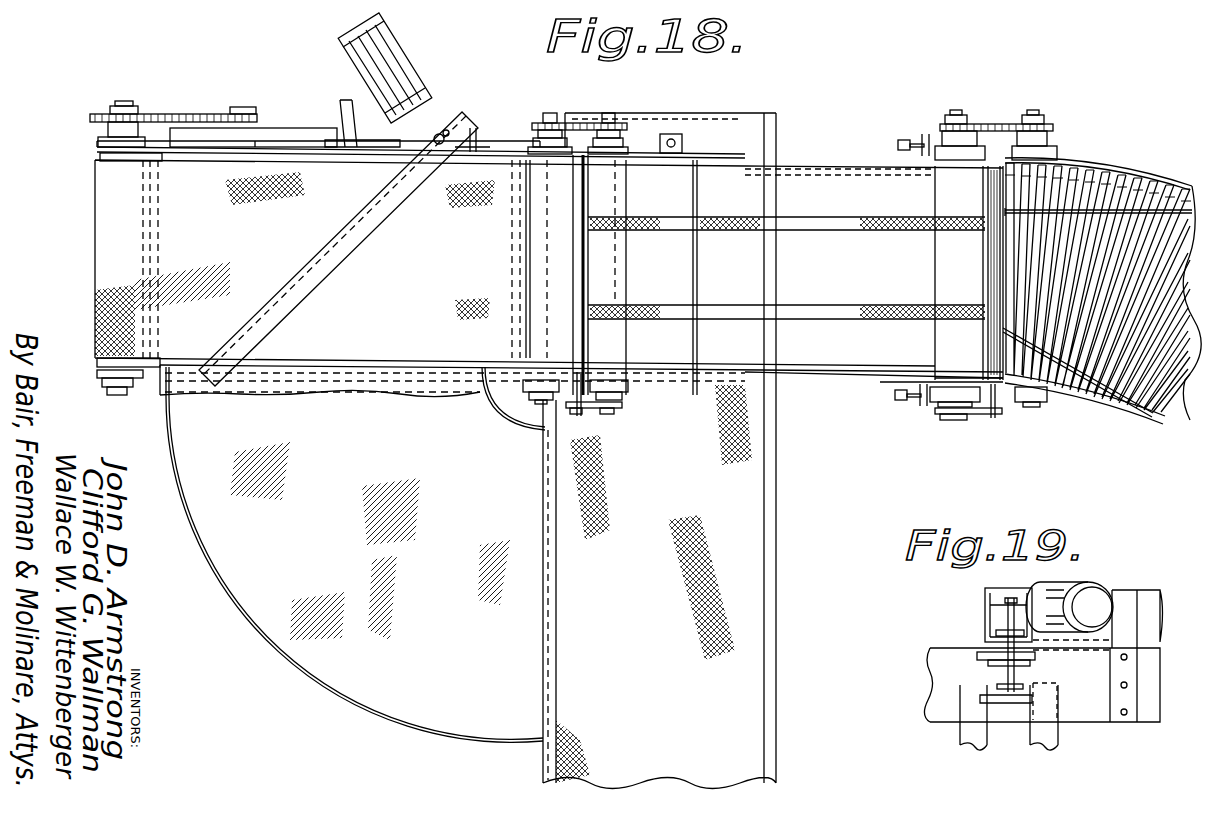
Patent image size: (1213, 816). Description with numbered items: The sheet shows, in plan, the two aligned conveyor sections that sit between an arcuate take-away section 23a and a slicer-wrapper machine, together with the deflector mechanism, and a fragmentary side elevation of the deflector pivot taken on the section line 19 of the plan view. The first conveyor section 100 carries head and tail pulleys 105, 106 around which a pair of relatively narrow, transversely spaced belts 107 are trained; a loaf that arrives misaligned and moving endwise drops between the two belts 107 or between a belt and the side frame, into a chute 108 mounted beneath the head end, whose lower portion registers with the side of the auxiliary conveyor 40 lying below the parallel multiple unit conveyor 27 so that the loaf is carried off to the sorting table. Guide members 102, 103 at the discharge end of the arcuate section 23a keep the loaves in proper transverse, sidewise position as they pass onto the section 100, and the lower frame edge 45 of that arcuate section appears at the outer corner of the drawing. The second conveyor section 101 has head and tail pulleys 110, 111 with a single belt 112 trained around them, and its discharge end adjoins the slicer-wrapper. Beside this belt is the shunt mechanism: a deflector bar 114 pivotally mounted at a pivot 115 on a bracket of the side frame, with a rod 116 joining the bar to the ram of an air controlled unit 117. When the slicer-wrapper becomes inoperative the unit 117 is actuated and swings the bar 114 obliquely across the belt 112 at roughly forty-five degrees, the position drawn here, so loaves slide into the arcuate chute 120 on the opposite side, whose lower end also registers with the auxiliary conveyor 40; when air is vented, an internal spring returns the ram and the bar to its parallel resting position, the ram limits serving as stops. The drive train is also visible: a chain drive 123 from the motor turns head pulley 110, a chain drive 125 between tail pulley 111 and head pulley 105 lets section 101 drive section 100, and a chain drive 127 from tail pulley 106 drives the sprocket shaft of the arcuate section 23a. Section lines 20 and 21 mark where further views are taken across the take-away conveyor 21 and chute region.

In FIG. 18, the conveyor section 100 is at (853, 158).
In FIG. 18, the conveyor section 101 is at (250, 180).
In FIG. 19, the conveyor section 101 is at (956, 645).
In FIG. 18, the guide member 102 is at (1095, 194).
In FIG. 18, the guide member 103 is at (1060, 363).
In FIG. 18, the head pulley 105 is at (607, 254).
In FIG. 18, the tail pulley 106 is at (950, 241).
In FIG. 18, the belts 107 is at (812, 230).
In FIG. 18, the chute 108 is at (790, 275).
In FIG. 18, the head pulley 110 is at (128, 222).
In FIG. 18, the tail pulley 111 is at (533, 228).
In FIG. 18, the belt 112 is at (357, 340).
In FIG. 18, the deflector bar 114 is at (352, 232).
In FIG. 19, the deflector bar 114 is at (1128, 596).
In FIG. 18, the pivot mounting 115 is at (443, 133).
In FIG. 19, the pivot mounting 115 is at (1010, 623).
In FIG. 18, the rod 116 is at (393, 110).
In FIG. 18, the air controlled unit 117 is at (414, 68).
In FIG. 19, the air controlled unit 117 is at (1062, 584).
In FIG. 18, the arcuate chute 120 is at (320, 657).
In FIG. 18, the chain drive 123 is at (150, 117).
In FIG. 18, the chain drive 125 is at (582, 129).
In FIG. 18, the chain drive 127 is at (990, 129).
In FIG. 18, the arcuate conveyor section 23a is at (1097, 184).
In FIG. 18, the multiple unit conveyor 27 is at (789, 146).
In FIG. 18, the auxiliary conveyor 40 is at (740, 575).
In FIG. 18, the roller frame lower edge 45 is at (1150, 410).
In FIG. 18, the section line 19— 19 is at (445, 28).
In FIG. 18, the section line 20- 20 is at (1150, 437).
In FIG. 18, the take-away conveyor 21 is at (990, 270).